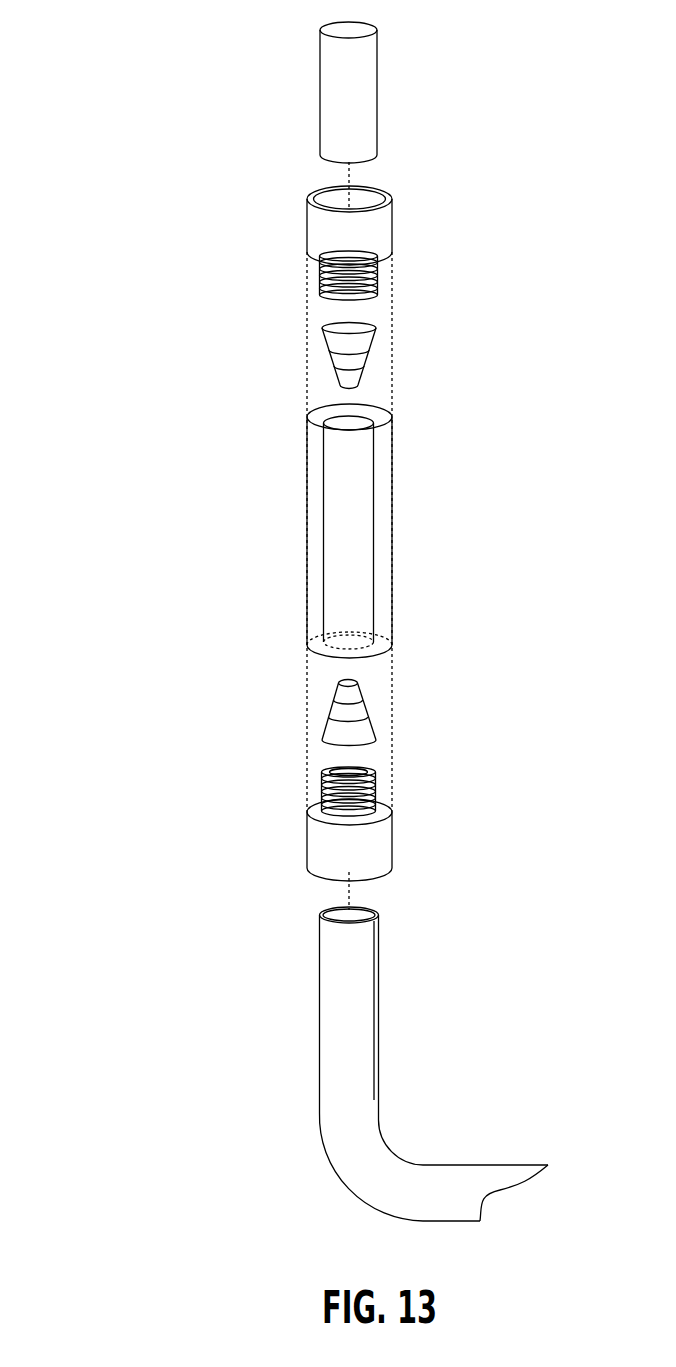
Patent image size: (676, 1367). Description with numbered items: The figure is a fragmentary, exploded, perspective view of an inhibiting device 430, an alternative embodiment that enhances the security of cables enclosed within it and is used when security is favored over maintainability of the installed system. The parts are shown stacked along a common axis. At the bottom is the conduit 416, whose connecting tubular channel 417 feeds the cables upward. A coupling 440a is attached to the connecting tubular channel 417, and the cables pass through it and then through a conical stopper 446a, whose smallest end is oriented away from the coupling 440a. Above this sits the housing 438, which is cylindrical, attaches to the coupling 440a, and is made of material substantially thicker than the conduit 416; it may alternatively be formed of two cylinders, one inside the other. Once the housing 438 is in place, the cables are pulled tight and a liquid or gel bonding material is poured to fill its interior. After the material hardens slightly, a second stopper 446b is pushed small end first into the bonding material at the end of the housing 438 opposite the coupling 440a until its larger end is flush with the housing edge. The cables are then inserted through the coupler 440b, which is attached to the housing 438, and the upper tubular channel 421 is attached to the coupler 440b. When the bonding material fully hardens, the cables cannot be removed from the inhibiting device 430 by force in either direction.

The inhibiting device 430 is at (90, 103).
The upper tubular channel 421 is at (387, 92).
The coupler 440b is at (396, 243).
The second stopper 446b is at (292, 359).
The housing 438 is at (387, 531).
The conical stopper 446a is at (292, 727).
The coupling 440a is at (393, 824).
The conduit 416 is at (387, 1013).
The connecting tubular channel 417 is at (433, 1167).